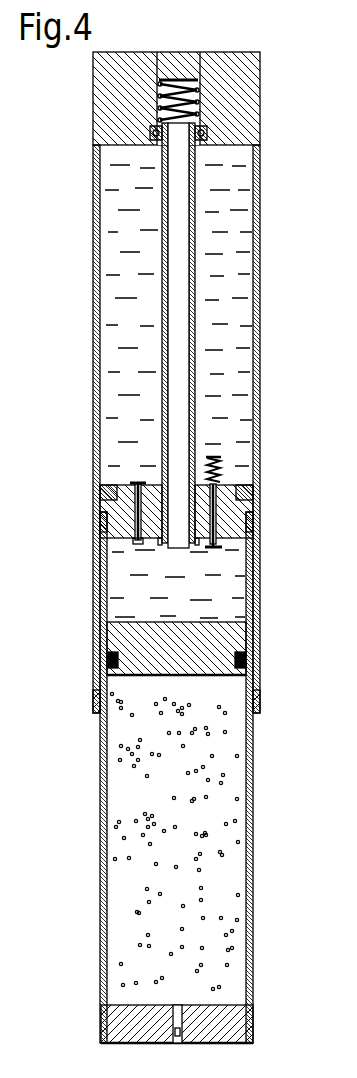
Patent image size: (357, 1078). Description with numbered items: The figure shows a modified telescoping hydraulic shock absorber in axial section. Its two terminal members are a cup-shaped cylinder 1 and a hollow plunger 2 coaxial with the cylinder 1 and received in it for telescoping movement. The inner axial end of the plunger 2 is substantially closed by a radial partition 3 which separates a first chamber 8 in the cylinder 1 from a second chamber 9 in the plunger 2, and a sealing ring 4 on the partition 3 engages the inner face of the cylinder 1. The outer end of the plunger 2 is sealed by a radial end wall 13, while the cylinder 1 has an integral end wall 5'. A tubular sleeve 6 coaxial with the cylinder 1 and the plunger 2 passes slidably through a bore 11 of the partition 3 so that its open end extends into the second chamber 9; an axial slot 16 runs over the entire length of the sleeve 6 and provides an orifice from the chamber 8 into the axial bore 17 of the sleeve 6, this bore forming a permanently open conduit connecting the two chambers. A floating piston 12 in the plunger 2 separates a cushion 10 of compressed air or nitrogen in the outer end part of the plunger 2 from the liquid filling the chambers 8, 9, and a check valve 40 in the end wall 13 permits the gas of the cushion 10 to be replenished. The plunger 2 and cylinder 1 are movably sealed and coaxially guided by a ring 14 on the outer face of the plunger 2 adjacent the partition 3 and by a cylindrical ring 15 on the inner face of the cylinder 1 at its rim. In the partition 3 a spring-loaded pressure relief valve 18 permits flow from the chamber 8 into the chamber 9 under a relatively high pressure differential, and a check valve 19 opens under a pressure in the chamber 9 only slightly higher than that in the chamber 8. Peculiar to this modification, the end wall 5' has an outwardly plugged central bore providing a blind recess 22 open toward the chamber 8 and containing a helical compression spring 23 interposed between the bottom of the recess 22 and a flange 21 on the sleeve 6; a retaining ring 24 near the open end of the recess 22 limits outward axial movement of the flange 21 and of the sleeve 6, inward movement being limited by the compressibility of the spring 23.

The cylinder 1 is at (93, 360).
The hollow plunger 2 is at (253, 778).
The radial partition 3 is at (248, 525).
The sealing ring 4 is at (253, 477).
The integral end wall 5' is at (156, 98).
The tubular sleeve 6 is at (195, 252).
The first chamber 8 is at (118, 230).
The second chamber 9 is at (99, 583).
The cushion 10 is at (224, 860).
The bore 11 is at (157, 484).
The floating piston 12 is at (246, 638).
The end wall 13 is at (250, 1022).
The ring 14 is at (94, 512).
The cylindrical ring 15 is at (95, 705).
The axial slot 16 is at (163, 305).
The axial bore 17 is at (180, 343).
The pressure relief valve 18 is at (213, 548).
The check valve 19 is at (140, 540).
The flange 21 is at (150, 130).
The blind recess 22 is at (170, 80).
The helical compression spring 23 is at (200, 105).
The retaining ring 24 is at (200, 130).
The check valve 40 is at (176, 1043).